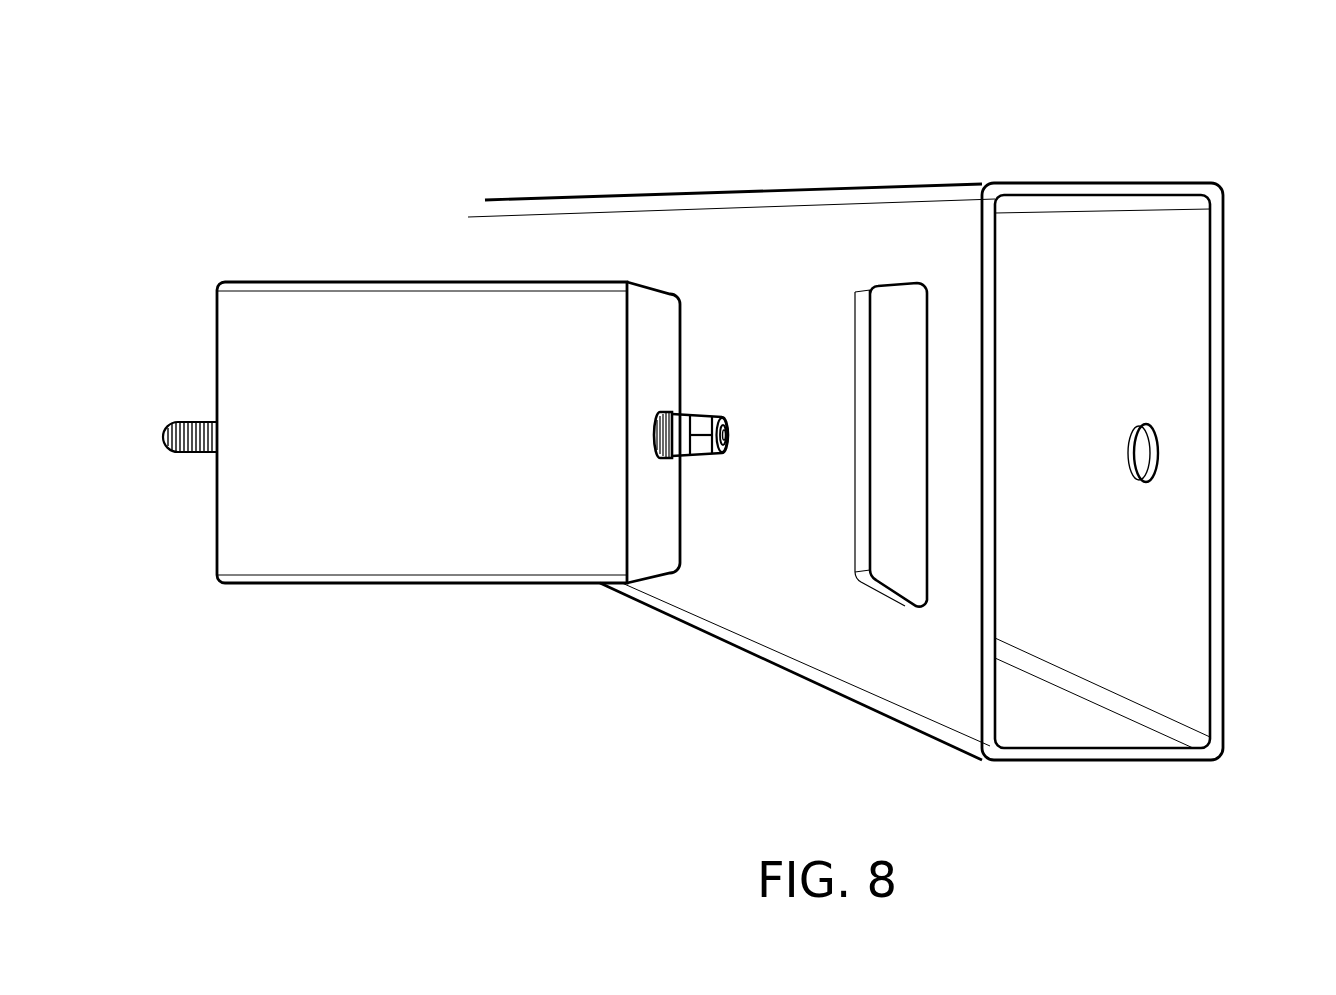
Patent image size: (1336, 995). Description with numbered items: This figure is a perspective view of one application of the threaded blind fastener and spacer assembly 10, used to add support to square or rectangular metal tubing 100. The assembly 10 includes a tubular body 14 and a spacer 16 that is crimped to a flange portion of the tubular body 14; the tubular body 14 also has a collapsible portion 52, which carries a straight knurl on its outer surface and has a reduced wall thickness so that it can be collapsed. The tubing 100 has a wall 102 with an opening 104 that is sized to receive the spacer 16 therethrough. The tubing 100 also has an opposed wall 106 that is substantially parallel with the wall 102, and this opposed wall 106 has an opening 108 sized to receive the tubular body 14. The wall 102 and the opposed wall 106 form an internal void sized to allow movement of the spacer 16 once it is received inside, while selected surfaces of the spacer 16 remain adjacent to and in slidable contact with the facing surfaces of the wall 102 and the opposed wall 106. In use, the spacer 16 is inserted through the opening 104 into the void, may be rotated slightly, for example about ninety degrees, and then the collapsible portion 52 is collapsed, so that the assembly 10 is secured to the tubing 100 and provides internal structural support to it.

The threaded blind fastener and spacer assembly 10 is at (388, 165).
The tubular body 14 is at (702, 423).
The spacer 16 is at (420, 281).
The collapsible portion 52 is at (667, 460).
The tubing 100 is at (800, 675).
The wall 102 is at (962, 237).
The opening 104 is at (900, 318).
The opposed wall 106 is at (1225, 220).
The opening 108 is at (1137, 427).